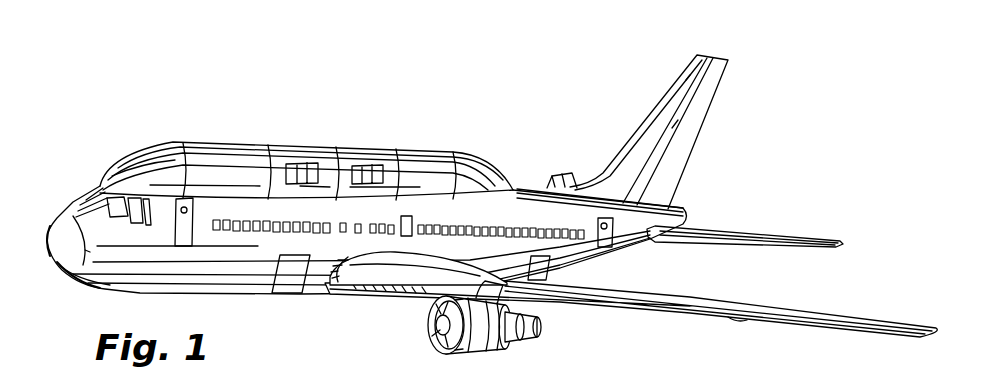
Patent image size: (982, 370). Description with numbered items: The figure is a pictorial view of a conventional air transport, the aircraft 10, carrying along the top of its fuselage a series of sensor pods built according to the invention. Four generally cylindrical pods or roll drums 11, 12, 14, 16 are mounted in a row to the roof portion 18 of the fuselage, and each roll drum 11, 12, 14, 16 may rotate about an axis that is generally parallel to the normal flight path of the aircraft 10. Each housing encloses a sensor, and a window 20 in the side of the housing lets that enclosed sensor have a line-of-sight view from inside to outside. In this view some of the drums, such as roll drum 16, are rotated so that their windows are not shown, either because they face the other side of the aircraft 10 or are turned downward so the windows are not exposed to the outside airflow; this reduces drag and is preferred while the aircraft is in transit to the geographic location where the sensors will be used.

The aircraft 10 is at (492, 204).
The roll drum 11 is at (241, 141).
The roll drum 12 is at (307, 139).
The roll drum 14 is at (377, 139).
The roll drum 16 is at (428, 141).
The roof portion 18 is at (533, 180).
The window 20 is at (315, 160).